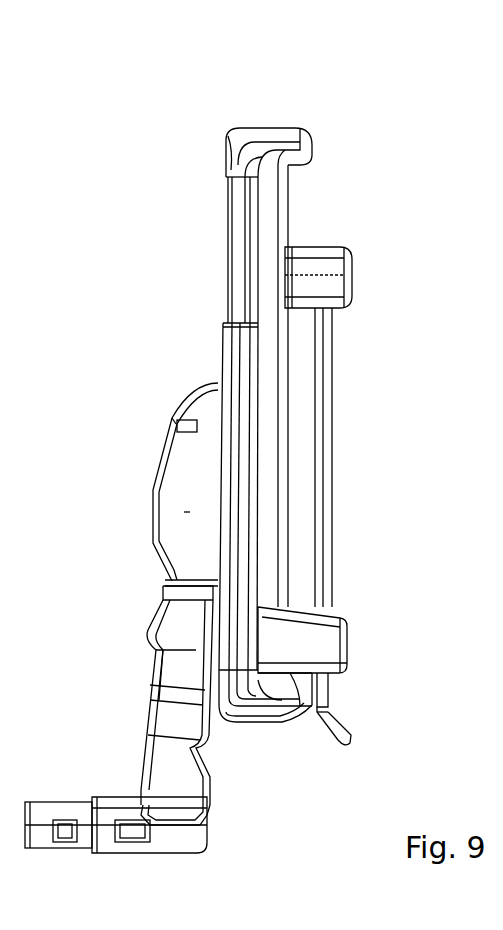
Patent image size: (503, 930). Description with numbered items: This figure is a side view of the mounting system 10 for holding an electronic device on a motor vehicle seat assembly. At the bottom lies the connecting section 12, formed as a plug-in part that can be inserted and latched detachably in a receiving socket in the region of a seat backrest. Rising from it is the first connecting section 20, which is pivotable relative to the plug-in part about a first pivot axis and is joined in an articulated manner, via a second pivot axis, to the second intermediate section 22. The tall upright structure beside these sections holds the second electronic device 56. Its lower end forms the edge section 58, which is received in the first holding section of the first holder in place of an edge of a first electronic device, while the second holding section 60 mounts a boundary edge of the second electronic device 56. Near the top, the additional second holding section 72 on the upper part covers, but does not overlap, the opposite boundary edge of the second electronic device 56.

The mounting system 10 is at (337, 107).
The connecting section 12 is at (197, 877).
The first connecting section 20 is at (173, 637).
The second intermediate section 22 is at (168, 494).
The second electronic device 56 is at (327, 505).
The edge section 58 is at (284, 690).
The second holding section 60 is at (330, 650).
The additional second holding section 72 is at (340, 290).